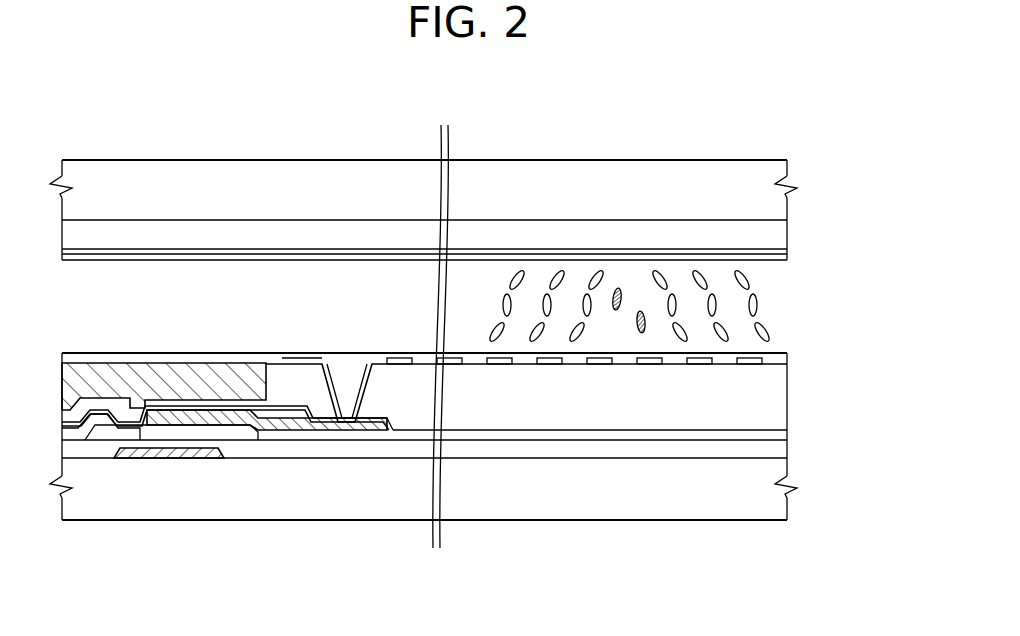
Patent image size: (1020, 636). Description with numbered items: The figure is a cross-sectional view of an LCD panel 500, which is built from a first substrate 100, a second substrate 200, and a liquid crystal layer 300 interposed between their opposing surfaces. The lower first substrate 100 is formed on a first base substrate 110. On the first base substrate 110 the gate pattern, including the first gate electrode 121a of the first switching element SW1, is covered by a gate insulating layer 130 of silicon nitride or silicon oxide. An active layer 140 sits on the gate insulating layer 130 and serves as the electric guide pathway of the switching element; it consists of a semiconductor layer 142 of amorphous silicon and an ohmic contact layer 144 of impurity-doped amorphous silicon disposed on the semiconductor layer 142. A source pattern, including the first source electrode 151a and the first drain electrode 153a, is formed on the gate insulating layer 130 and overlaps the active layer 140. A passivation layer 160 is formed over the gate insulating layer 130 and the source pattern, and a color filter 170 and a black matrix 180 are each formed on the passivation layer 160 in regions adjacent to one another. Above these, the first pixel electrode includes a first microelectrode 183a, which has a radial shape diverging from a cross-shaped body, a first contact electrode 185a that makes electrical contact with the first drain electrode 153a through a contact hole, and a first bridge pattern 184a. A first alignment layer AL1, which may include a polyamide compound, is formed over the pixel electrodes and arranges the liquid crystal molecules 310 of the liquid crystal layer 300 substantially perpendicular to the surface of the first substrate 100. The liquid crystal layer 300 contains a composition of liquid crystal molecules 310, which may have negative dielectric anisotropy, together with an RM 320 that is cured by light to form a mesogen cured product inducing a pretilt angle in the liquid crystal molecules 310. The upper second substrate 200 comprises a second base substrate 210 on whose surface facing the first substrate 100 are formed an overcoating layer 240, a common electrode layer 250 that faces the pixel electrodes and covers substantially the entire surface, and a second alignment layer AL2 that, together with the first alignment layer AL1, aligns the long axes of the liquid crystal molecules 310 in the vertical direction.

The LCD panel 500 is at (452, 78).
The second substrate 200 is at (803, 155).
The second base substrate 210 is at (239, 172).
The overcoating layer 240 is at (400, 240).
The common electrode layer 250 is at (500, 256).
The second alignment layer AL2 is at (547, 262).
The liquid crystal layer 300 is at (803, 268).
The liquid crystal molecules 310 is at (513, 281).
The RM 320 is at (638, 312).
The first substrate 100 is at (803, 352).
The first base substrate 110 is at (467, 512).
The gate insulating layer 130 is at (515, 448).
The passivation layer 160 is at (557, 430).
The color filter 170 is at (678, 417).
The first alignment layer AL1 is at (577, 356).
The first microelectrode 183a is at (752, 358).
The first contact electrode 185a is at (352, 422).
The first bridge pattern 184a is at (395, 432).
The black matrix 180 is at (135, 392).
The first switching element SW1 is at (224, 516).
The first gate electrode 121a is at (150, 458).
The first source electrode 151a is at (107, 430).
The first drain electrode 153a is at (197, 418).
The active layer 140 is at (224, 498).
The semiconductor layer 142 is at (253, 437).
The ohmic contact layer 144 is at (275, 430).